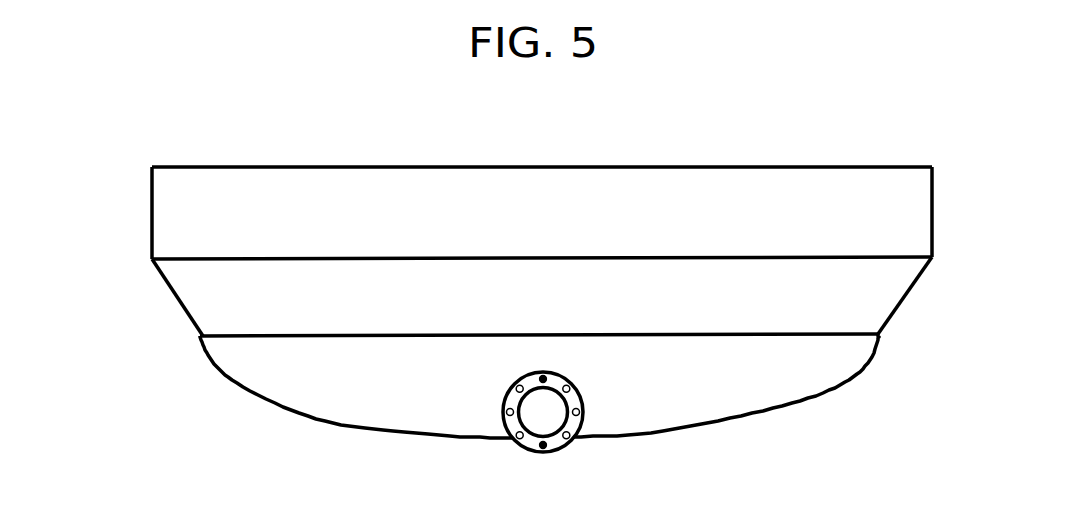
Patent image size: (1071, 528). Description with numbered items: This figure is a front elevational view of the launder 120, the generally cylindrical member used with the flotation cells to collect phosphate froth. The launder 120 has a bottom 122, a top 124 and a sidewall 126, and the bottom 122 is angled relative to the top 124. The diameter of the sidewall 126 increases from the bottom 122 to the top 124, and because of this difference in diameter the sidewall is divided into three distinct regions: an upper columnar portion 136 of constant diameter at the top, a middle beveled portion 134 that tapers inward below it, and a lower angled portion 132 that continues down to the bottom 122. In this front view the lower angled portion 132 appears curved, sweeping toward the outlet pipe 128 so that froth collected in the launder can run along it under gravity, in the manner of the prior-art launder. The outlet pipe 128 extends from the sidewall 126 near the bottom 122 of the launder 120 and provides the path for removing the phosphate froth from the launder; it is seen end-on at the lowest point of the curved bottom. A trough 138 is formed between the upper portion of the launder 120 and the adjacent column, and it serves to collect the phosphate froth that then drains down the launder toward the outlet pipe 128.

The launder 120 is at (775, 102).
The bottom 122 is at (390, 434).
The top 124 is at (378, 167).
The sidewall 126 is at (936, 228).
The outlet pipe 128 is at (535, 426).
The lower angled portion 132 is at (240, 381).
The middle beveled portion 134 is at (189, 308).
The upper columnar portion 136 is at (157, 230).
The trough 138 is at (908, 233).